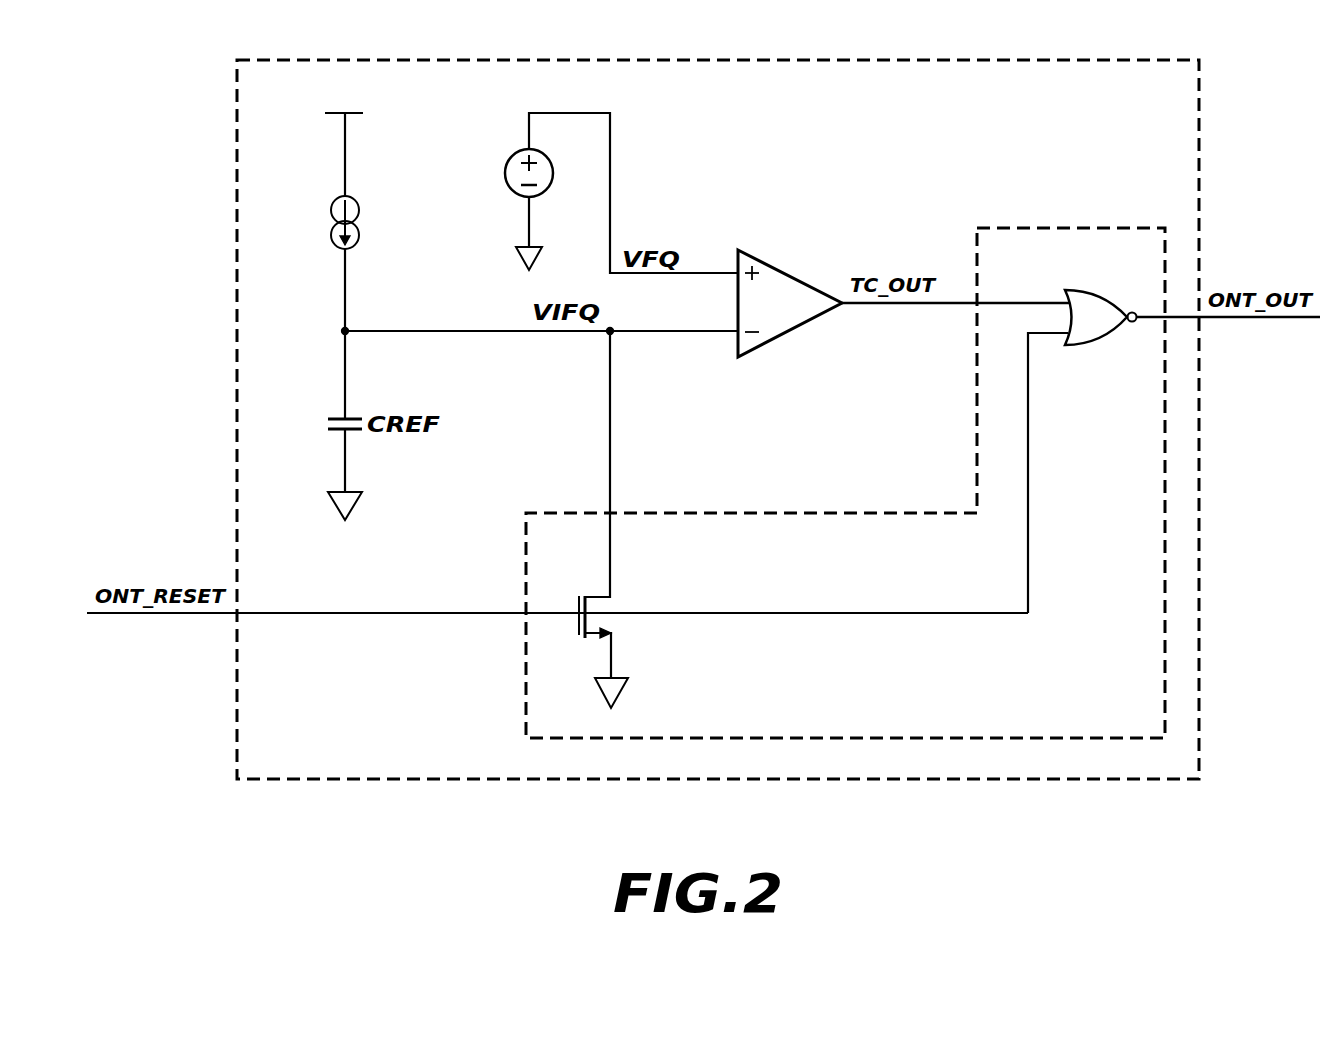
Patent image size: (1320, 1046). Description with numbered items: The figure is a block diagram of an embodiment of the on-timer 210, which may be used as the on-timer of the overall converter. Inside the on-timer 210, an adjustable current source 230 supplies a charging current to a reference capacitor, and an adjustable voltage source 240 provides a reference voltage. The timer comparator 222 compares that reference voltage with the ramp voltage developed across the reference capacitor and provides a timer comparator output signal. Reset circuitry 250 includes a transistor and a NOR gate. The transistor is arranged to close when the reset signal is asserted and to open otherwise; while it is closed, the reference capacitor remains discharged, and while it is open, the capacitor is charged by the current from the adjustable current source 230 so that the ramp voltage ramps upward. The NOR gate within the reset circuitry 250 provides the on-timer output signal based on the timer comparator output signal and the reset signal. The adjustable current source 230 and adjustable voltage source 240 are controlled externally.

The on-timer 210 is at (1052, 130).
The timer comparator 222 is at (791, 277).
The adjustable current source 230 is at (331, 204).
The adjustable voltage source 240 is at (507, 160).
The reset circuitry 250 is at (1130, 702).